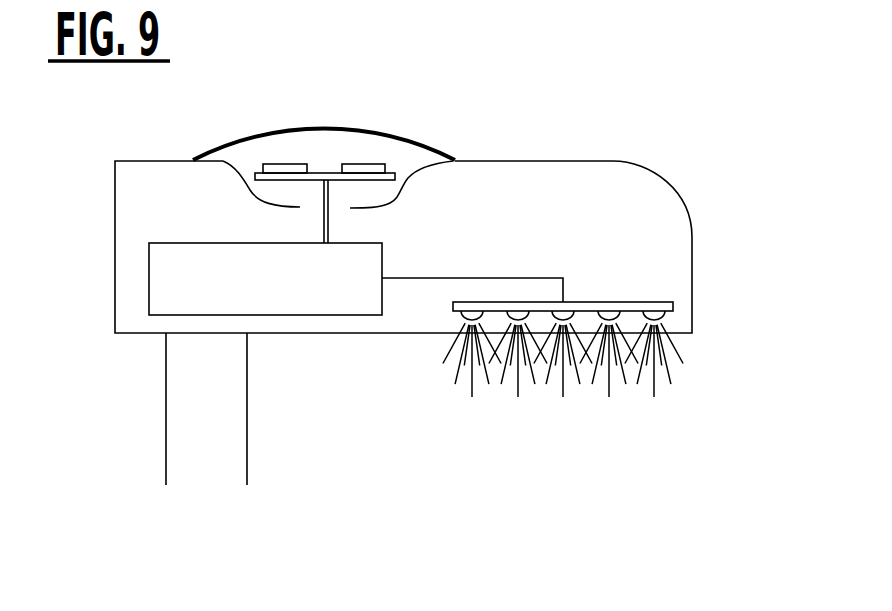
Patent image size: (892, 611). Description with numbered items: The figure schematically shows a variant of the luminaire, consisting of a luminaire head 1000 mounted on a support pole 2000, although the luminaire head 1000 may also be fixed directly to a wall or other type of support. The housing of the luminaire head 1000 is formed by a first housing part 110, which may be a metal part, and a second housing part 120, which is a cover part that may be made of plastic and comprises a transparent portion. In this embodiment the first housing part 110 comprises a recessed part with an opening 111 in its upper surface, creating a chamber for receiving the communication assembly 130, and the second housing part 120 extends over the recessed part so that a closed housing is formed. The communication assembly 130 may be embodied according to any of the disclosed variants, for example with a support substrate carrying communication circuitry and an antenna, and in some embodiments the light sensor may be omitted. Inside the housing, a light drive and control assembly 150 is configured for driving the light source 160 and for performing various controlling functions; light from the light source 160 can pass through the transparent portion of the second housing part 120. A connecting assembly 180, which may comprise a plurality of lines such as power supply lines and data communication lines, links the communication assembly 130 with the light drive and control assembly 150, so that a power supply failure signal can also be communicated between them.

The luminaire head 1000 is at (582, 138).
The first housing part 110 is at (655, 172).
The opening 111 is at (313, 207).
The second housing part 120 is at (360, 130).
The communication assembly 130 is at (400, 177).
The light drive and control assembly 150 is at (165, 243).
The light source 160 is at (647, 297).
The connecting assembly 180 is at (327, 228).
The support pole 2000 is at (210, 422).